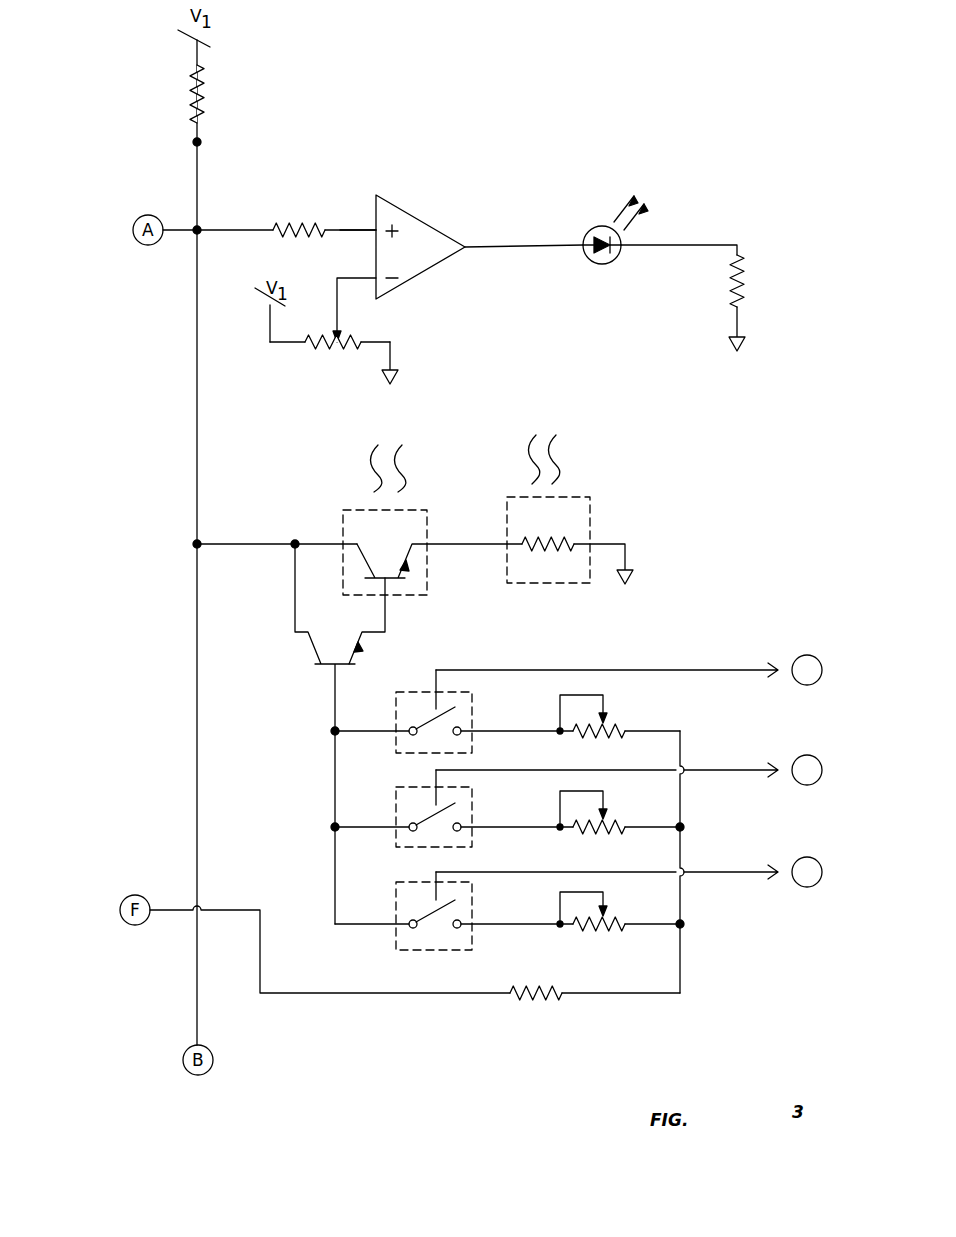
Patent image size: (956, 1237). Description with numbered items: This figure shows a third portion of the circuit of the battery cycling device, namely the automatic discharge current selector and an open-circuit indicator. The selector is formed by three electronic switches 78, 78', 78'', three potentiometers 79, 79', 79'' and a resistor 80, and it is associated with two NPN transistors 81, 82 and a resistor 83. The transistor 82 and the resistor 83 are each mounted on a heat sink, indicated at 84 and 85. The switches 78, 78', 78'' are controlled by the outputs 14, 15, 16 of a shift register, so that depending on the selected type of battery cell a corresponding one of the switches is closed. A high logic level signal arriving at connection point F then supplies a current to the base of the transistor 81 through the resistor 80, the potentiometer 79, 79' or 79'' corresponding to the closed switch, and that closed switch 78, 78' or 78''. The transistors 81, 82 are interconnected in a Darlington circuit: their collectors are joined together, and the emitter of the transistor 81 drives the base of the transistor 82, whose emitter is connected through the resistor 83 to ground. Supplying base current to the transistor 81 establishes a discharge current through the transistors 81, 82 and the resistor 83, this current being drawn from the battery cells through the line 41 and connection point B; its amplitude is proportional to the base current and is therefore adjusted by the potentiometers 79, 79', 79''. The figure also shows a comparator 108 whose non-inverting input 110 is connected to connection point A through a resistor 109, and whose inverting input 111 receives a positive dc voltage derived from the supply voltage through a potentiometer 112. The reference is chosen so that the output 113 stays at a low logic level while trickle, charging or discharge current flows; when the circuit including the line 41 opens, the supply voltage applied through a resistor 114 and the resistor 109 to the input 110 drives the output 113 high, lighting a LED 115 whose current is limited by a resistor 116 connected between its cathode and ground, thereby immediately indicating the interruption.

The line 41 is at (192, 597).
The resistor 114 is at (205, 110).
The resistor 109 is at (290, 228).
The non-inverting input 110 is at (350, 233).
The comparator 108 is at (430, 240).
The inverting input 111 is at (355, 281).
The potentiometer 112 is at (322, 350).
The output 113 is at (491, 250).
The LED 115 is at (609, 264).
The resistor 116 is at (745, 279).
The heat sink 84 is at (410, 446).
The heat sink 85 is at (568, 443).
The resistor 83 is at (565, 536).
The NPN transistor 82 is at (415, 577).
The NPN transistor 81 is at (305, 650).
The electronic switch 78 is at (458, 711).
The potentiometer 79 is at (570, 716).
The electronic switch 78' is at (462, 808).
The potentiometer 79' is at (570, 812).
The electronic switch 78'' is at (462, 911).
The potentiometer 79'' is at (570, 907).
The resistor 80 is at (538, 1000).
The output of the shift register 14 is at (629, 670).
The output of the shift register 15 is at (629, 770).
The output of the shift register 16 is at (629, 872).